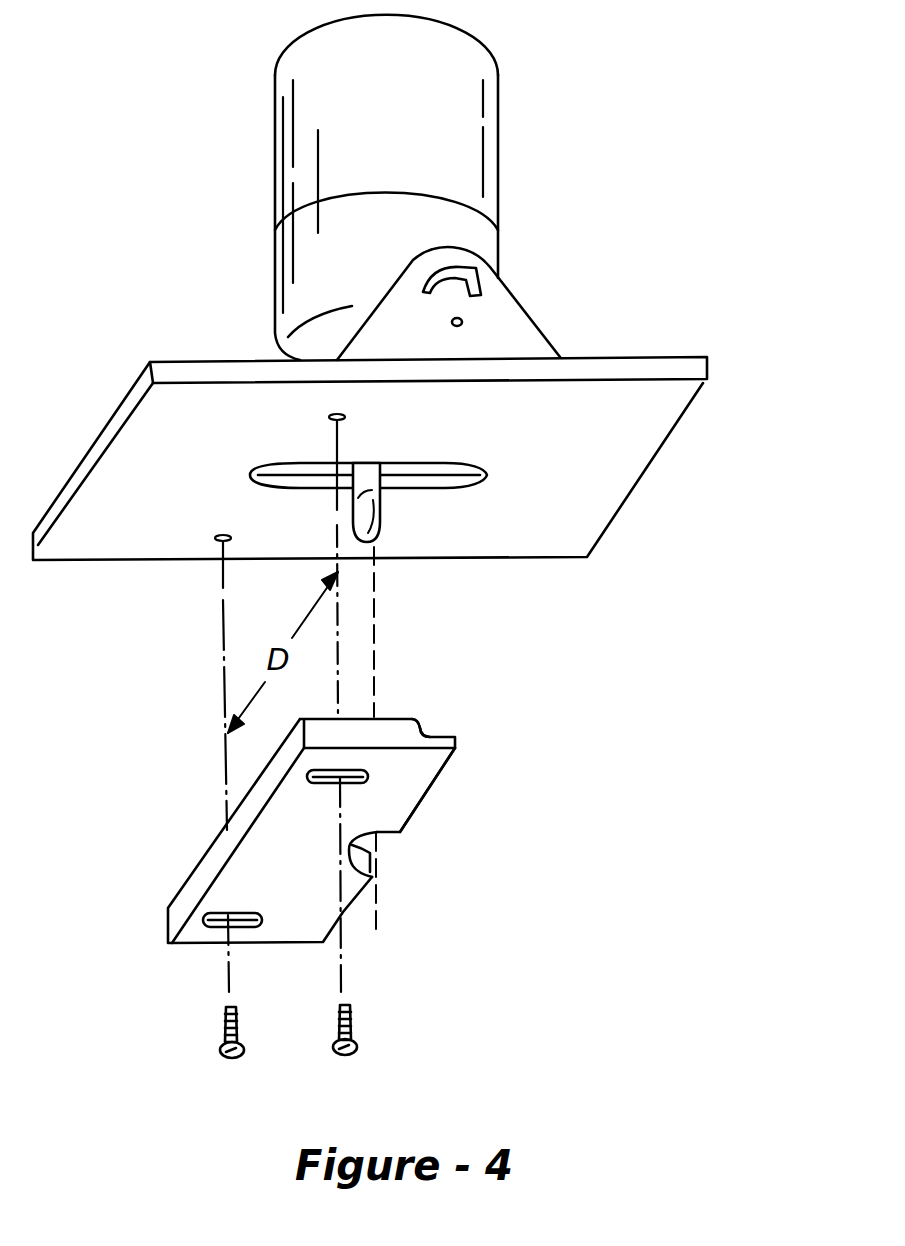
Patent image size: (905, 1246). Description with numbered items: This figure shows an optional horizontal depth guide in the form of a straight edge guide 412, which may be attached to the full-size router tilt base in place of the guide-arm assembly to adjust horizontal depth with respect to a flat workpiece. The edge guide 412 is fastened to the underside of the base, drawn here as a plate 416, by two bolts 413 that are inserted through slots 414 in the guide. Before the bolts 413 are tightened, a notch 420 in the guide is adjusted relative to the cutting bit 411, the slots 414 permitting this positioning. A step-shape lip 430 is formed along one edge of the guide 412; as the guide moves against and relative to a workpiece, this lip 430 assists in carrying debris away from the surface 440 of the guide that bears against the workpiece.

The cutting bit 411 is at (365, 470).
The straight edge guide 412 is at (222, 850).
The bolts 413 is at (235, 1057).
The slots 414 is at (357, 772).
The mounting plate 416 is at (612, 357).
The notch 420 is at (380, 853).
The step-shape lip 430 is at (430, 730).
The surface 440 is at (432, 795).